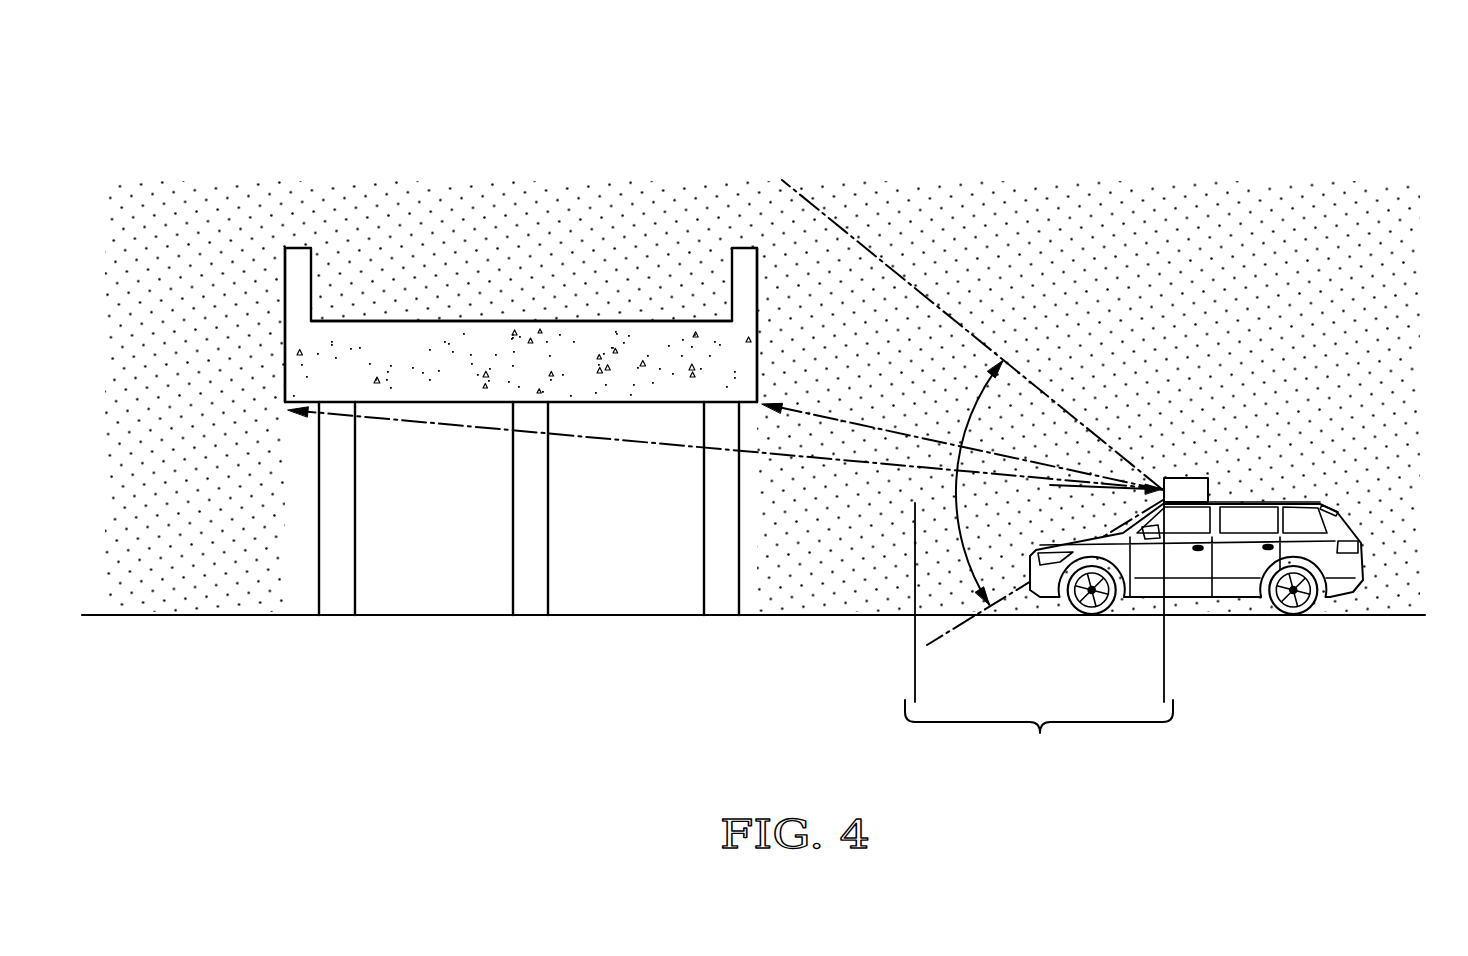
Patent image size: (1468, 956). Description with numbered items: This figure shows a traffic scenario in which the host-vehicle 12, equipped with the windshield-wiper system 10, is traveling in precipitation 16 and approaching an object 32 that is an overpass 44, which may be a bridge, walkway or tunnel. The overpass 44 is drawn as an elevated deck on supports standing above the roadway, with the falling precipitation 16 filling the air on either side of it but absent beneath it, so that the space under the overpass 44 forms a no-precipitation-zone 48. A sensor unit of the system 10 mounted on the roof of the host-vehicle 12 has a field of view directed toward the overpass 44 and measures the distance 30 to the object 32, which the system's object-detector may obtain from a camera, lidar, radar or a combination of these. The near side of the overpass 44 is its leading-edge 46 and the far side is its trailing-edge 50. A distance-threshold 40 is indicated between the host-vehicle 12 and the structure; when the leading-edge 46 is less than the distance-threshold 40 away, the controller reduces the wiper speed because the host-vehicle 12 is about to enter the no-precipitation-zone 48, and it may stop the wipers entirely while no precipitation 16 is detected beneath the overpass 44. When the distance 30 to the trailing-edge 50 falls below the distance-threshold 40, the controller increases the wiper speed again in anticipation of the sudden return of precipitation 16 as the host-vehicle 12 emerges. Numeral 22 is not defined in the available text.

The windshield-wiper system 10 is at (1187, 478).
The host-vehicle 12 is at (1324, 497).
The precipitation 16 is at (1311, 241).
The ground / roadway 22 is at (400, 615).
The distance 30 is at (875, 427).
The object 32 is at (416, 321).
The distance-threshold 40 is at (1039, 635).
The overpass 44 is at (547, 321).
The leading-edge 46 is at (758, 402).
The no-precipitation-zone 48 is at (620, 530).
The trailing-edge 50 is at (285, 402).